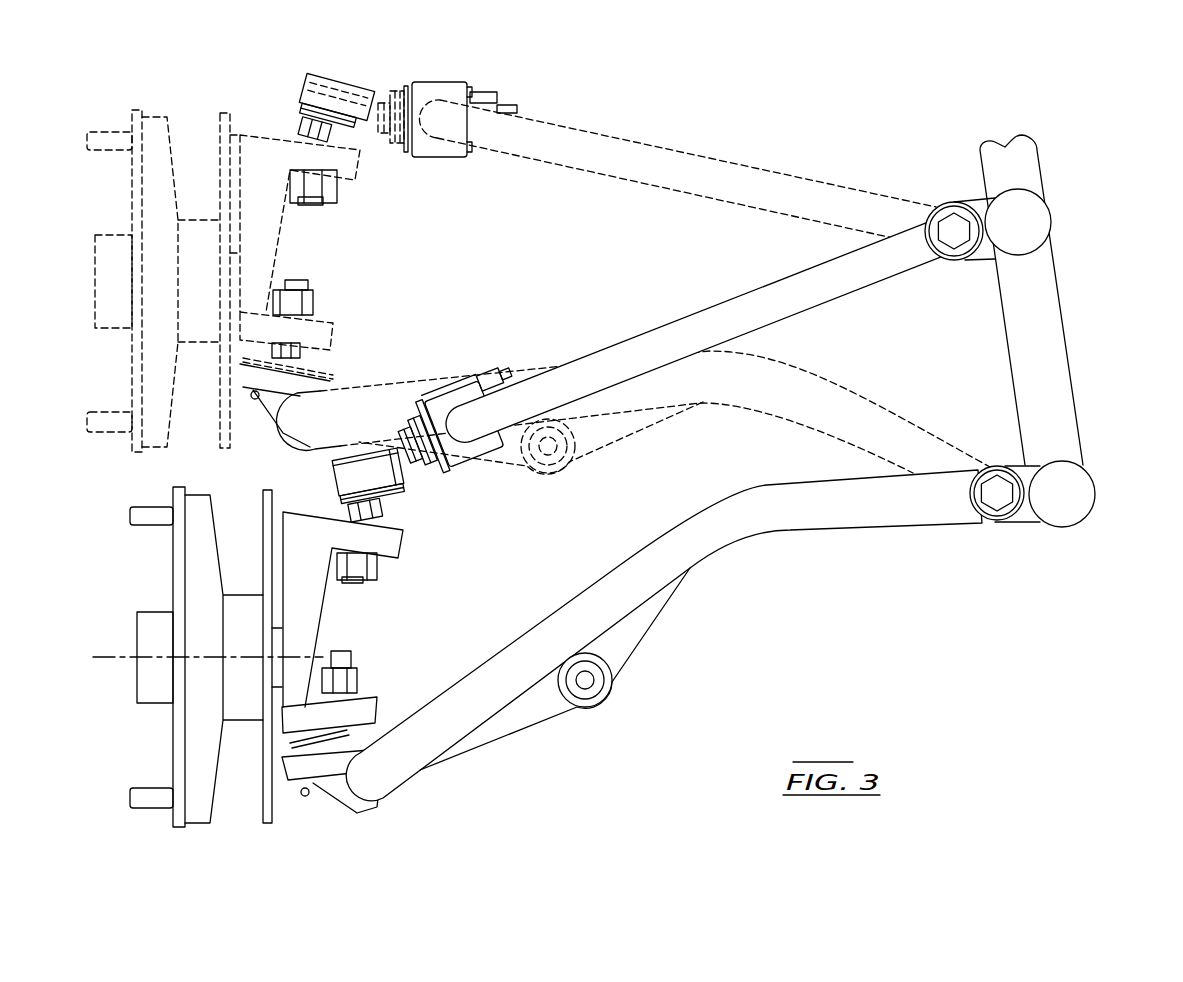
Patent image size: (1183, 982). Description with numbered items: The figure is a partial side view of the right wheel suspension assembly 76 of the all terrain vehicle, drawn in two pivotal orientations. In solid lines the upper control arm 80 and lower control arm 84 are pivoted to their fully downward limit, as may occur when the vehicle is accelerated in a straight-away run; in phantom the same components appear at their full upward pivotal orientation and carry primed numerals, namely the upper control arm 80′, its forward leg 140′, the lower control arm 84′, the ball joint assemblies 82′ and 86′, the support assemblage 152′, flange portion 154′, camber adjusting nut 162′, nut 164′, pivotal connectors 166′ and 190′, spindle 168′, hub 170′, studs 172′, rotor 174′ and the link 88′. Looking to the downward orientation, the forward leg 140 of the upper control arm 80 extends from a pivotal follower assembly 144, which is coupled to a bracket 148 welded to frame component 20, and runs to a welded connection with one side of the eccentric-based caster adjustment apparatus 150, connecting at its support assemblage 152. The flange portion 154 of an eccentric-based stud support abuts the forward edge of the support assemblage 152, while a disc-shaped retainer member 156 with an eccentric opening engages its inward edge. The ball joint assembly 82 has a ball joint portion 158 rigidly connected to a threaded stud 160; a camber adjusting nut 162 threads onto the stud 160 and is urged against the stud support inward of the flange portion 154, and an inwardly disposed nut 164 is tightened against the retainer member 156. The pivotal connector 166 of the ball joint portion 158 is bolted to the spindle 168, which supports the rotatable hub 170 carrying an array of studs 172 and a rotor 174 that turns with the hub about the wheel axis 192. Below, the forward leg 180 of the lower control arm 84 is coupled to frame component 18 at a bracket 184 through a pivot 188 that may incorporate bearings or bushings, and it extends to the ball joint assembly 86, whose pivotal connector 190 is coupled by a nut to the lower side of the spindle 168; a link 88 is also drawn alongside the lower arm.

The frame component 18 is at (1085, 495).
The frame component 20 is at (1040, 215).
The right wheel suspension assembly 76 is at (852, 102).
The upper control arm 80 is at (699, 330).
The upper control arm (upward pivotal orientation) 80′ is at (677, 169).
The ball joint assembly 82 is at (376, 435).
The ball joint assembly (upward pivotal orientation) 82′ is at (345, 87).
The lower control arm 84 is at (664, 635).
The lower control arm (upward pivotal orientation) 84′ is at (633, 412).
The ball joint assembly 86 is at (310, 803).
The ball joint assembly (upward pivotal orientation) 86′ is at (338, 366).
The link 88 is at (643, 650).
The link (alternate position) 88′ is at (618, 444).
The forward leg of upper control arm 140 is at (760, 308).
The forward leg of upper control arm (upward pivotal orientation) 140′ is at (648, 162).
The pivotal follower assembly 144 is at (940, 178).
The bracket 148 is at (976, 205).
The eccentric-based caster adjustment apparatus 150 is at (491, 412).
The support assemblage 152 is at (438, 395).
The support assemblage (upward pivotal orientation) 152′ is at (486, 112).
The flange portion 154 is at (453, 470).
The flange portion (upward pivotal orientation) 154′ is at (410, 152).
The disc-shaped retainer member 156 is at (468, 366).
The ball joint portion 158 is at (332, 476).
The threaded stud 160 is at (410, 487).
The camber adjusting nut 162 is at (424, 410).
The camber adjusting nut (upward pivotal orientation) 162′ is at (402, 97).
The inwardly disposed nut 164 is at (498, 378).
The inwardly disposed nut (upward pivotal orientation) 164′ is at (488, 93).
The pivotal connector 166 is at (350, 515).
The pivotal connector (upward pivotal orientation) 166′ is at (310, 133).
The spindle 168 is at (315, 605).
The spindle (upward pivotal orientation) 168′ is at (265, 234).
The hub 170 is at (197, 496).
The hub (upward pivotal orientation) 170′ is at (177, 281).
The studs 172 is at (150, 520).
The studs (upward pivotal orientation) 172′ is at (118, 137).
The rotor 174 is at (265, 828).
The rotor (upward pivotal orientation) 174′ is at (228, 118).
The forward leg of lower control arm 180 is at (752, 540).
The bracket 184 is at (1025, 520).
The pivot 188 is at (1003, 503).
The pivotal connector 190 is at (355, 712).
The pivotal connector (upward pivotal orientation) 190′ is at (295, 285).
The wheel axis 192 is at (102, 657).